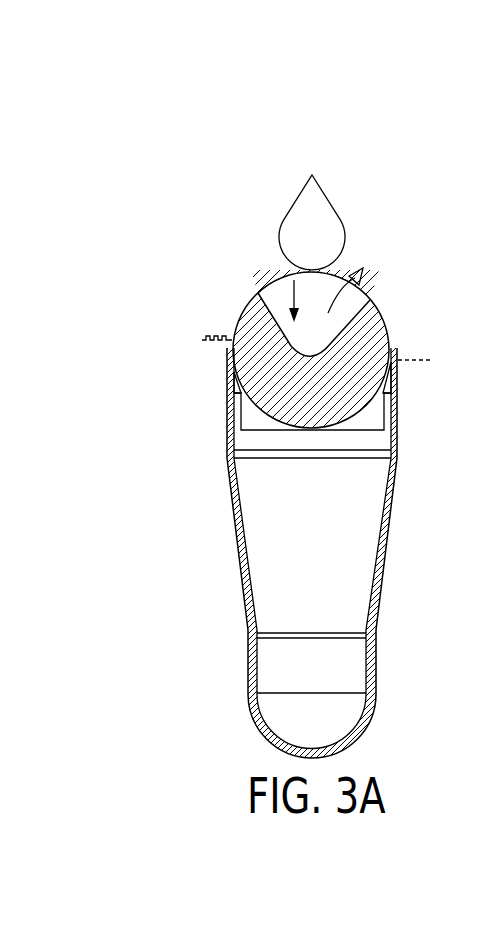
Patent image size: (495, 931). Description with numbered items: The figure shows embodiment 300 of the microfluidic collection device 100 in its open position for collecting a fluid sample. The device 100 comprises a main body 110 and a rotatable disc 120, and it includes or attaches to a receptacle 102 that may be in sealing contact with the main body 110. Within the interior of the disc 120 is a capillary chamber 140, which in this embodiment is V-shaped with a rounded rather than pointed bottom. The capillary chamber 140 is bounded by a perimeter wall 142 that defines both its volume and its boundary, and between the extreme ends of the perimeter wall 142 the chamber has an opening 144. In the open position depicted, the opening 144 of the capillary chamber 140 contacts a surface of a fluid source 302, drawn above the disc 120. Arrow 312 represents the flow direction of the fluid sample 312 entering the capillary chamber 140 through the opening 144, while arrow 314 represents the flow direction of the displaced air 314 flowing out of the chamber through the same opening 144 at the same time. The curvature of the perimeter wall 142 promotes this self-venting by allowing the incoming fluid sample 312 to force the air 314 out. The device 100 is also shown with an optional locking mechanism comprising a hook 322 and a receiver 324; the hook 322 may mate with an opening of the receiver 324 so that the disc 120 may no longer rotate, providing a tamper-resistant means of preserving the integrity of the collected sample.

The device 100 is at (200, 213).
The receptacle 102 is at (386, 562).
The main body 110 is at (232, 378).
The disc 120 is at (230, 390).
The capillary chamber 140 is at (260, 289).
The perimeter wall 142 is at (374, 304).
The opening 144 is at (274, 292).
The embodiment 300 is at (408, 143).
The fluid source 302 is at (333, 194).
The fluid sample 312 is at (333, 280).
The air 314 is at (372, 294).
The hook 322 is at (202, 322).
The receiver 324 is at (416, 364).